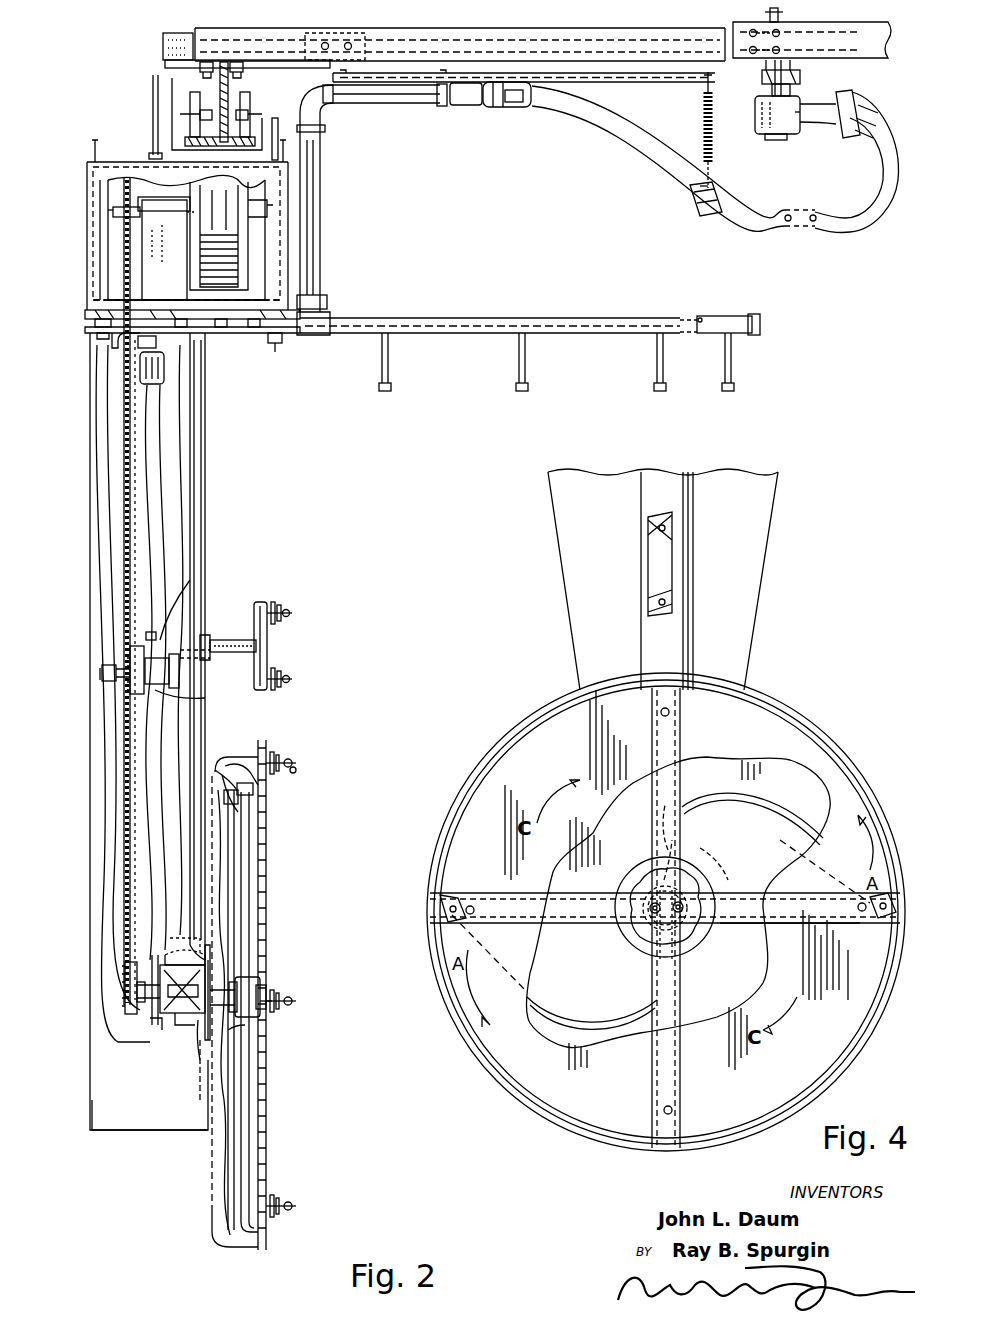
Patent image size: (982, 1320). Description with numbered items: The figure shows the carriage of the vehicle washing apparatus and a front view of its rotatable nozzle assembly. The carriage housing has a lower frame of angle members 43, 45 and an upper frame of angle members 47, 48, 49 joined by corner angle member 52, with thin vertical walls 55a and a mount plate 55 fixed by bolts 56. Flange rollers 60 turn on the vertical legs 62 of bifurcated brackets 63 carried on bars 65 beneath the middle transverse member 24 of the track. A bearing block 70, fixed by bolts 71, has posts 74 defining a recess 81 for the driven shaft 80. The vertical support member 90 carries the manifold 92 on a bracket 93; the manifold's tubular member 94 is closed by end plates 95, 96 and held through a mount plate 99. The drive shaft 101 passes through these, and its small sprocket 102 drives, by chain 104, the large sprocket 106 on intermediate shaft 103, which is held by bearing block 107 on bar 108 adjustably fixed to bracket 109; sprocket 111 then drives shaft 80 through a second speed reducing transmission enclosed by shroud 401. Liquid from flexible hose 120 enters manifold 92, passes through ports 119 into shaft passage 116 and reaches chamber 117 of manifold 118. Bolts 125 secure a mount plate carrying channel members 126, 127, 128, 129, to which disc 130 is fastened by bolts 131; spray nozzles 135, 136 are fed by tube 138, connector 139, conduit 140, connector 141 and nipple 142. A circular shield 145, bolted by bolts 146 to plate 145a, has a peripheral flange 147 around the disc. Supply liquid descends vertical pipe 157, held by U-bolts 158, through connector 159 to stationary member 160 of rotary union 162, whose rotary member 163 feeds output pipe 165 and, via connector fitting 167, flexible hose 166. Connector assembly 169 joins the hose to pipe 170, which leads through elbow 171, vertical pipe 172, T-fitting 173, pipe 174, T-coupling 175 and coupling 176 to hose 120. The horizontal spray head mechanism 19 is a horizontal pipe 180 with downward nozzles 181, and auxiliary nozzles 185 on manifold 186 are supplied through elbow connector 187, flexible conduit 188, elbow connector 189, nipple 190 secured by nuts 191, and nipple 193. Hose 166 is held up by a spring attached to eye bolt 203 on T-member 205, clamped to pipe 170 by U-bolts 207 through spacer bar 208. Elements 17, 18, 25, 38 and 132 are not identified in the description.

In FIG. 2, the conveyor frame 17 is at (108, 912).
In FIG. 2, the water supply assembly 18 is at (780, 160).
In FIG. 2, the horizontal spray head mechanism 19 is at (514, 318).
In FIG. 2, the middle transverse member 24 is at (447, 20).
In FIG. 2, the mounting bolts 25 is at (218, 55).
In FIG. 2, the hanger bracket 38 is at (238, 85).
In FIG. 2, the angle member 43 is at (90, 314).
In FIG. 2, the angle member 45 is at (108, 302).
In FIG. 2, the angle member 47 is at (321, 162).
In FIG. 2, the angle member 48 is at (86, 186).
In FIG. 2, the angle member 49 is at (120, 172).
In FIG. 2, the vertical corner angle member 52 is at (104, 196).
In FIG. 2, the mount plate 55 is at (254, 334).
In FIG. 2, the vertical walls 55a is at (98, 245).
In FIG. 2, the bolts 56 is at (96, 336).
In FIG. 2, the flange rollers 60 is at (247, 72).
In FIG. 2, the vertical legs 62 is at (192, 112).
In FIG. 2, the bifurcated brackets 63 is at (172, 142).
In FIG. 2, the bars 65 is at (275, 142).
In FIG. 2, the bearing block 70 is at (218, 334).
In FIG. 2, the bolts 71 is at (236, 334).
In FIG. 2, the post 74 is at (162, 210).
In FIG. 2, the driven shaft 80 is at (113, 212).
In FIG. 2, the recess 81 is at (190, 280).
In FIG. 2, the vertical support member 90 is at (206, 548).
In FIG. 2, the manifold 92 is at (182, 1026).
In FIG. 2, the bracket 93 is at (212, 956).
In FIG. 2, the tubular member 94 is at (156, 1022).
In FIG. 2, the end plate 95 is at (142, 1000).
In FIG. 2, the end plate 96 is at (152, 970).
In FIG. 2, the mount plate 99 is at (160, 952).
In FIG. 2, the drive shaft 101 is at (140, 992).
In FIG. 2, the sprocket 102 is at (124, 980).
In FIG. 2, the intermediate shaft 103 is at (102, 672).
In FIG. 2, the chain 104 is at (124, 788).
In FIG. 2, the large sprocket 106 is at (110, 660).
In FIG. 2, the bearing block 107 is at (130, 665).
In FIG. 2, the bar 108 is at (182, 686).
In FIG. 2, the bracket 109 is at (170, 670).
In FIG. 2, the sprocket 111 is at (205, 700).
In FIG. 2, the internal longitudinal passage 116 is at (262, 972).
In FIG. 4, the chamber 117 is at (690, 880).
In FIG. 2, the manifold 118 is at (266, 994).
In FIG. 2, the ports 119 is at (176, 1030).
In FIG. 2, the flexible hose 120 is at (124, 762).
In FIG. 4, the bolts 125 is at (684, 906).
In FIG. 4, the channel member 126 is at (582, 914).
In FIG. 4, the channel member 127 is at (670, 782).
In FIG. 4, the channel member 128 is at (735, 920).
In FIG. 4, the channel member 129 is at (672, 994).
In FIG. 4, the disc 130 is at (540, 725).
In FIG. 2, the bolts 131 is at (272, 1004).
In FIG. 4, the bolts 131 is at (473, 905).
In FIG. 4, the bolt hole 132 is at (672, 710).
In FIG. 2, the spray nozzle 135 is at (296, 772).
In FIG. 4, the spray nozzle 135 is at (448, 908).
In FIG. 2, the spray nozzle 136 is at (278, 758).
In FIG. 4, the spray nozzle 136 is at (890, 898).
In FIG. 2, the tube 138 is at (242, 760).
In FIG. 2, the connector 139 is at (228, 768).
In FIG. 2, the conduit 140 is at (248, 826).
In FIG. 4, the conduit 140 is at (805, 792).
In FIG. 2, the connector 141 is at (268, 960).
In FIG. 4, the connector 141 is at (680, 830).
In FIG. 2, the nipple 142 is at (260, 982).
In FIG. 4, the nipple 142 is at (694, 847).
In FIG. 2, the circular shield 145 is at (214, 1220).
In FIG. 2, the plate 145a is at (204, 1082).
In FIG. 2, the bolts 146 is at (248, 1036).
In FIG. 2, the annular peripheral flange 147 is at (250, 1240).
In FIG. 2, the vertical pipe 157 is at (780, 18).
In FIG. 2, the U-bolts 158 is at (780, 50).
In FIG. 2, the connector 159 is at (790, 74).
In FIG. 2, the stationary member 160 is at (790, 88).
In FIG. 2, the rotary union 162 is at (755, 140).
In FIG. 2, the rotary member 163 is at (798, 130).
In FIG. 2, the output pipe 165 is at (756, 110).
In FIG. 2, the flexible hose 166 is at (745, 216).
In FIG. 2, the connector fitting 167 is at (850, 110).
In FIG. 2, the connector assembly 169 is at (494, 108).
In FIG. 2, the pipe 170 is at (442, 106).
In FIG. 2, the elbow 171 is at (326, 108).
In FIG. 2, the vertical pipe 172 is at (326, 300).
In FIG. 2, the T-fitting 173 is at (314, 334).
In FIG. 2, the pipe 174 is at (280, 344).
In FIG. 2, the T-coupling 175 is at (138, 342).
In FIG. 2, the coupling 176 is at (140, 370).
In FIG. 2, the horizontal pipe 180 is at (615, 326).
In FIG. 2, the nozzles 181 is at (515, 388).
In FIG. 2, the auxiliary nozzles 185 is at (288, 612).
In FIG. 2, the manifold 186 is at (270, 650).
In FIG. 2, the elbow connector 187 is at (112, 340).
In FIG. 2, the flexible conduit 188 is at (108, 405).
In FIG. 2, the elbow connector 189 is at (168, 640).
In FIG. 2, the nipple 190 is at (214, 590).
In FIG. 2, the nuts 191 is at (212, 634).
In FIG. 2, the nipple 193 is at (242, 644).
In FIG. 2, the eye bolt 203 is at (702, 112).
In FIG. 2, the T-member 205 is at (592, 84).
In FIG. 2, the U-bolts 207 is at (466, 106).
In FIG. 2, the spacer bar 208 is at (384, 98).
In FIG. 2, the shroud 401 is at (118, 1128).